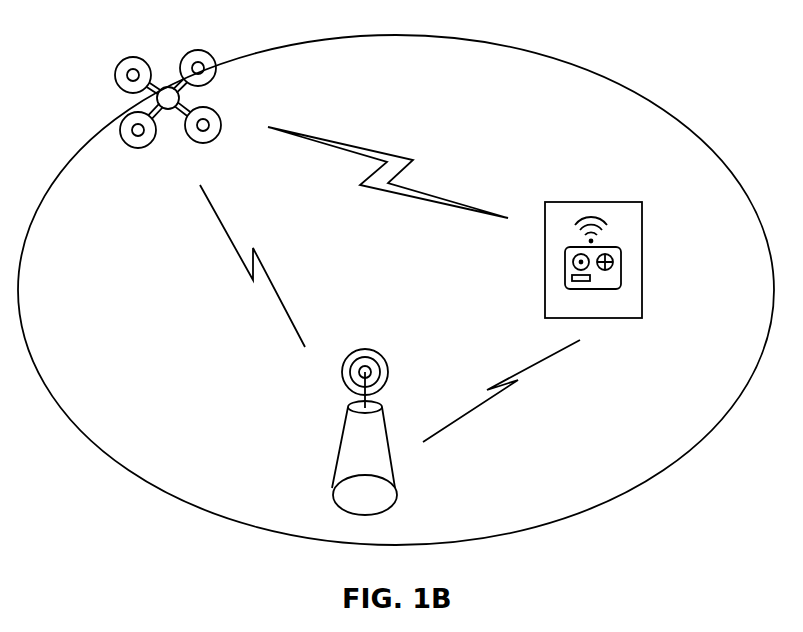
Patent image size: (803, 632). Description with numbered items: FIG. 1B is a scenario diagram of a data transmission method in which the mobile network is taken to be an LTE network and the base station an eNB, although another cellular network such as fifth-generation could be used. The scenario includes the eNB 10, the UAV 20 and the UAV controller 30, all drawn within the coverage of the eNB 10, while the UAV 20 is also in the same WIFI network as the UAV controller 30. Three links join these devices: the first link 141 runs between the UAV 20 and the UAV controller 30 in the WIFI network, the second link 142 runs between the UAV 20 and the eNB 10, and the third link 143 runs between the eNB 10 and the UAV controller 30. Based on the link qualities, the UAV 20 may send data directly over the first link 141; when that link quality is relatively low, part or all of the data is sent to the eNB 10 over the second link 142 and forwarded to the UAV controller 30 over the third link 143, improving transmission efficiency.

The eNB 10 is at (395, 487).
The UAV 20 is at (217, 73).
The UAV controller 30 is at (643, 272).
The first link 141 is at (413, 160).
The second link 142 is at (240, 263).
The third link 143 is at (518, 388).